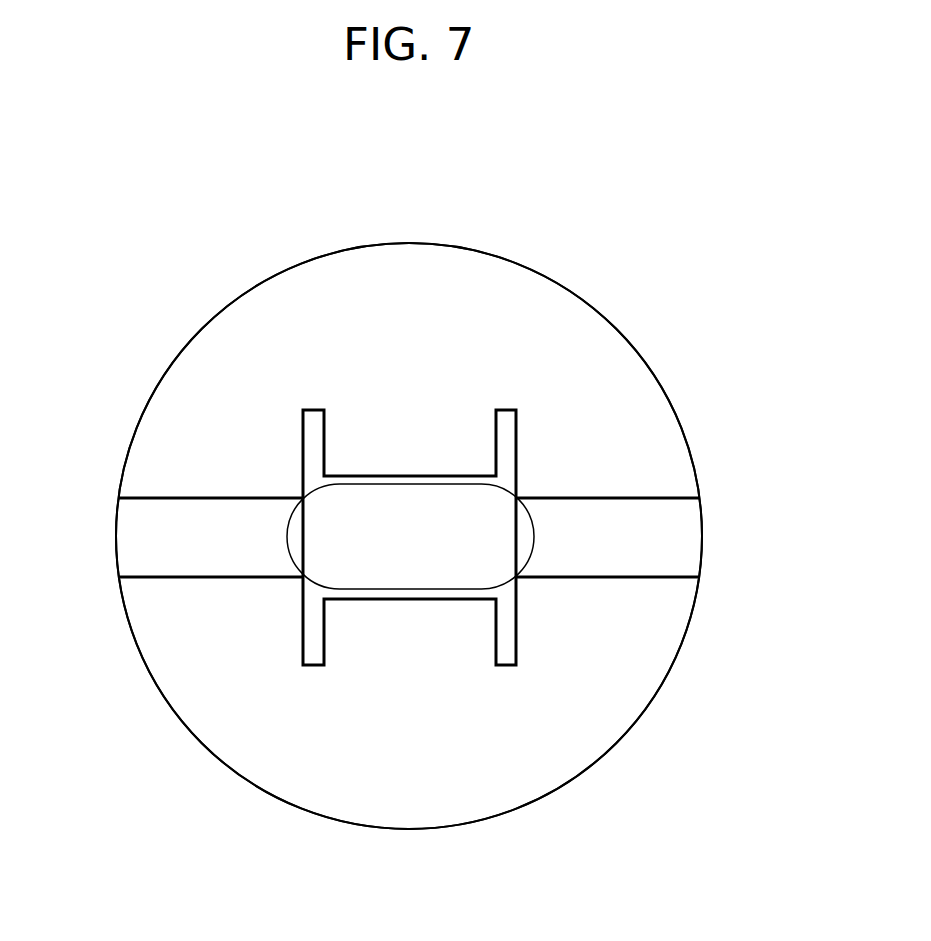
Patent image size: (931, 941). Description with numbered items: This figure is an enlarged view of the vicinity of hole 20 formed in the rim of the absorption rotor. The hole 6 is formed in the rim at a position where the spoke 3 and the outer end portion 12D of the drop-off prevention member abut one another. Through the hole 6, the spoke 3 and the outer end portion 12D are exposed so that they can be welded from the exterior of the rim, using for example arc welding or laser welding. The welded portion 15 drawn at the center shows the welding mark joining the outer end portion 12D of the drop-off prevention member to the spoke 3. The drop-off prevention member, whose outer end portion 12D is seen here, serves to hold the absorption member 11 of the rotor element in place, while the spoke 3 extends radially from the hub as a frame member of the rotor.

The vicinity of hole 20 is at (665, 167).
The hole 6 is at (648, 377).
The absorption member 11 is at (488, 266).
The spoke 3 is at (680, 542).
The outer end portion 12D is at (315, 428).
The welded portion 15 is at (320, 524).